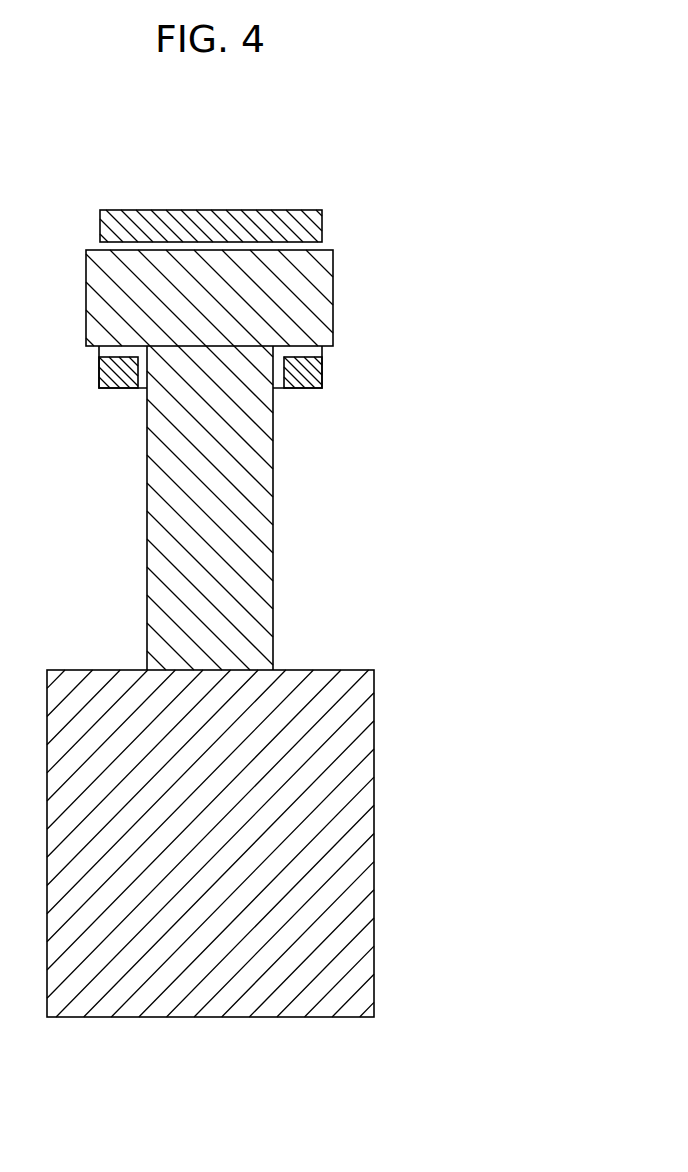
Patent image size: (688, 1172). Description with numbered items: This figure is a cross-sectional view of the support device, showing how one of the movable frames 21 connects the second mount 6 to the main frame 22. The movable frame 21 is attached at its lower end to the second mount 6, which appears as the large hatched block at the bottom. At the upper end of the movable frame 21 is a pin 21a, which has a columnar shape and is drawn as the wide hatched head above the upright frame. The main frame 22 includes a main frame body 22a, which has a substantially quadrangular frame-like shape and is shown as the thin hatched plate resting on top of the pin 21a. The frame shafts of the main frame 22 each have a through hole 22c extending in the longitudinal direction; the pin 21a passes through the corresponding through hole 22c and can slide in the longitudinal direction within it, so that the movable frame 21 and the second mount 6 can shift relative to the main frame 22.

The main frame 22 is at (268, 174).
The main frame body 22a is at (283, 210).
The movable frame 21 is at (276, 460).
The pin 21a is at (315, 295).
The through hole 22c is at (122, 355).
The second mount 6 is at (375, 790).